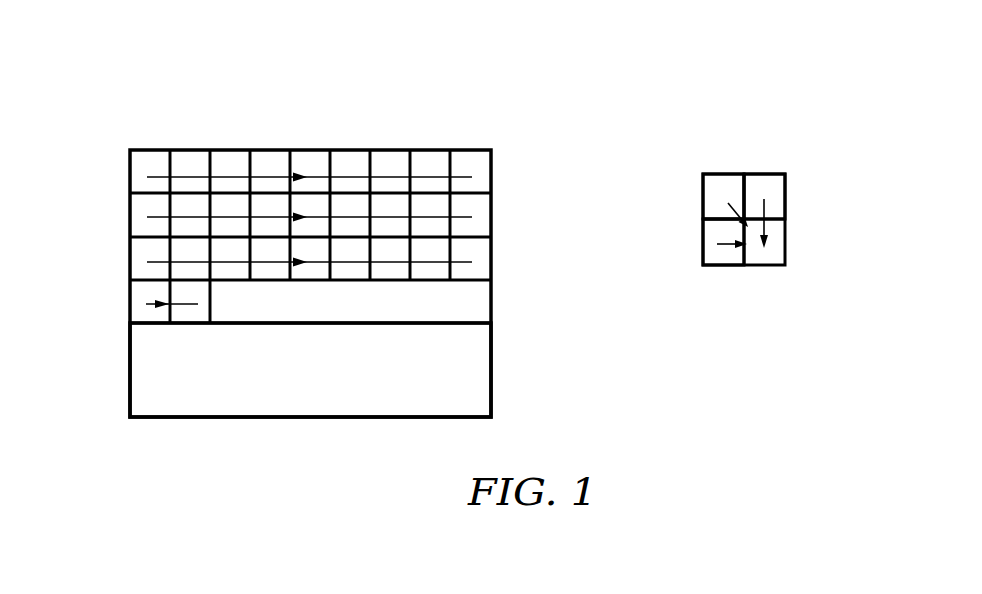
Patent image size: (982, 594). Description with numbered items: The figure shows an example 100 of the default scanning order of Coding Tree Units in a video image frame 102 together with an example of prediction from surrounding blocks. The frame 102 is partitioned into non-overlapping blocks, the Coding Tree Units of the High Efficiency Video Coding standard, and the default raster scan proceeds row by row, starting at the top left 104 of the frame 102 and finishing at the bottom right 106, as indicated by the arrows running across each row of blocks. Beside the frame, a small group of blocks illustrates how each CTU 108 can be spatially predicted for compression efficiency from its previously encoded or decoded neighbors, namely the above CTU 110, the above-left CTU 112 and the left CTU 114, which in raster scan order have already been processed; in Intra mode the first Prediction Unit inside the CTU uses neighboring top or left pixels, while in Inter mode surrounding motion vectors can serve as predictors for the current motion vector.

The example 100 is at (426, 72).
The frame 102 is at (234, 418).
The top left 104 is at (130, 166).
The bottom right 106 is at (491, 392).
The CTU 108 is at (773, 254).
The above CTU 110 is at (773, 173).
The above-left CTU 112 is at (717, 173).
The left CTU 114 is at (702, 239).